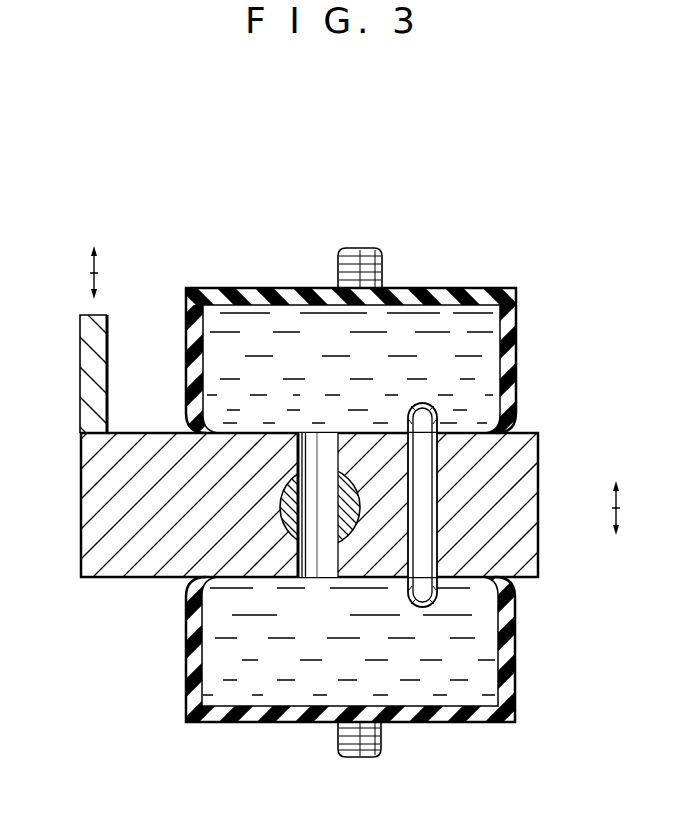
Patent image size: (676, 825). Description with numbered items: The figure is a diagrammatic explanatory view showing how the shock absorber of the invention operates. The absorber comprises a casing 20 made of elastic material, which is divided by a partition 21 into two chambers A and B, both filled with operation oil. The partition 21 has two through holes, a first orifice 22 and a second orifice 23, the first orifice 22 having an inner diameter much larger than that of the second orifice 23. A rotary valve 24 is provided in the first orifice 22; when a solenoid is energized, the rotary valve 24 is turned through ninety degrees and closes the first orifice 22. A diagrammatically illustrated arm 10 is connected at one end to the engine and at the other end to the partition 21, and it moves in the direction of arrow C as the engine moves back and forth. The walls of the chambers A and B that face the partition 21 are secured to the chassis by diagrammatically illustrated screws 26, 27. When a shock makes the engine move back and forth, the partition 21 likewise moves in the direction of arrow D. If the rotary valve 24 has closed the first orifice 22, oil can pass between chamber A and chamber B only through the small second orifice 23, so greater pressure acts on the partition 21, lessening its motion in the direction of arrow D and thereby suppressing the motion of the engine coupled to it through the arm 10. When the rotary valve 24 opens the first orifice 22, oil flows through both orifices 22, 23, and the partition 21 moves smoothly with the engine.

The arm 10 is at (80, 375).
The casing 20 is at (252, 288).
The partition 21 is at (540, 486).
The first orifice 22 is at (314, 577).
The second orifice 23 is at (428, 510).
The rotary valve 24 is at (280, 505).
The screw 26 is at (382, 262).
The screw 27 is at (380, 752).
The chamber A is at (485, 372).
The chamber B is at (492, 630).
The arrow C is at (93, 273).
The arrow D is at (618, 507).